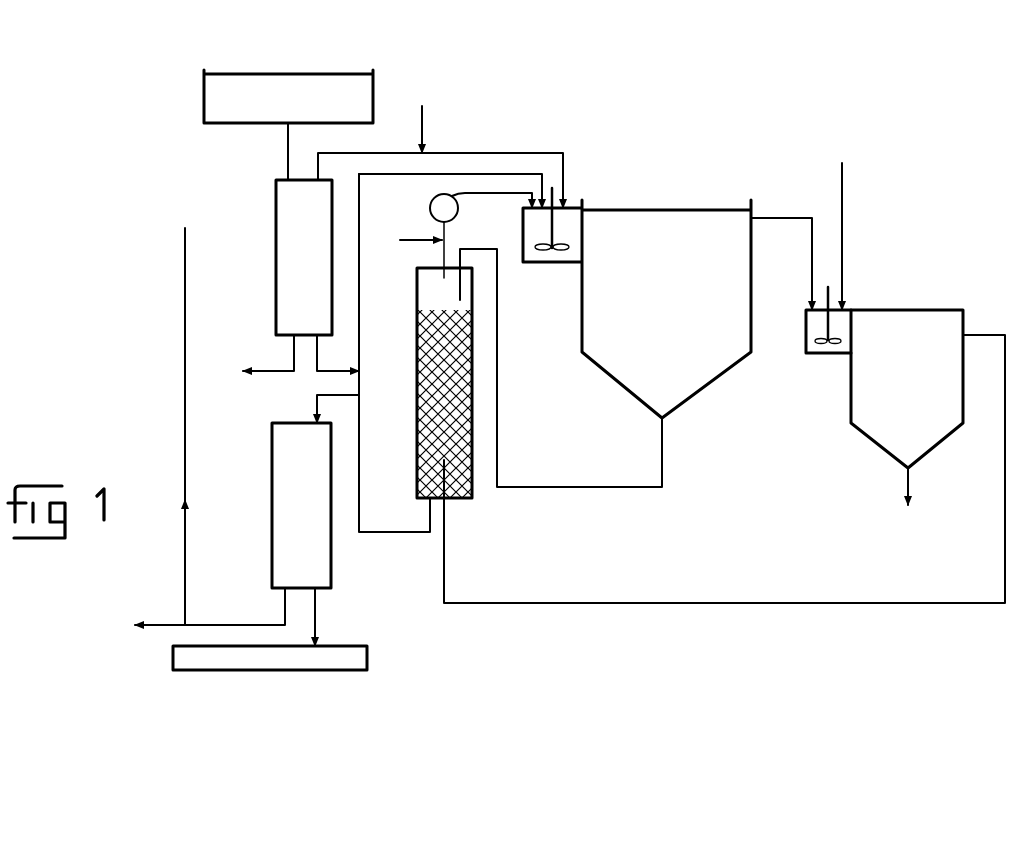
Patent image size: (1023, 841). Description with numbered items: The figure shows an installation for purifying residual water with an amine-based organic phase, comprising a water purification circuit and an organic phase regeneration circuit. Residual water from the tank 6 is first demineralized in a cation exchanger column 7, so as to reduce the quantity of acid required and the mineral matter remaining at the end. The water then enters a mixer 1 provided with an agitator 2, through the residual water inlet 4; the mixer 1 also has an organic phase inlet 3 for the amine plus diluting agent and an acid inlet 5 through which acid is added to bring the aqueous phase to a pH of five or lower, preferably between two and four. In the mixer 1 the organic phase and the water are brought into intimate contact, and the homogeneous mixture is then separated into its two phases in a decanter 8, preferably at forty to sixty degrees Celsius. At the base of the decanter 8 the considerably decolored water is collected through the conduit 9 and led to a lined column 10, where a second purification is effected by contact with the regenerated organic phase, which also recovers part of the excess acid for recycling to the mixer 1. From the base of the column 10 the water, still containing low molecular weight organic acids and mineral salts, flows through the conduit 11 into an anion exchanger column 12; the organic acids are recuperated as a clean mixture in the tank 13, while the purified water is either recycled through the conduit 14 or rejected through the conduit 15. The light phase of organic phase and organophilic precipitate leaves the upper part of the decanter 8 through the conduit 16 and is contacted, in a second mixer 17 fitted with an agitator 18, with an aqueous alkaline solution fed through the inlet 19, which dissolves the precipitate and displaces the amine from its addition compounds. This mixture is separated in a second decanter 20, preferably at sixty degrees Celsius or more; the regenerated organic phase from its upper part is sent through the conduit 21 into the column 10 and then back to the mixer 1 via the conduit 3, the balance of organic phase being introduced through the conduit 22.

The mixer 1 is at (570, 225).
The agitator 2 is at (546, 253).
The organic phase inlet 3 is at (508, 197).
The residual water inlet 4 is at (489, 173).
The acid inlet 5 is at (440, 153).
The tank 6 is at (210, 100).
The cation exchanger column 7 is at (286, 238).
The decanter 8 is at (665, 296).
The conduit 9 is at (589, 487).
The lined column 10 is at (418, 343).
The conduit 11 is at (418, 532).
The anion exchanger column 12 is at (286, 511).
The tank 13 is at (345, 650).
The conduit 14 is at (185, 371).
The conduit 15 is at (155, 625).
The conduit 16 is at (779, 216).
The second mixer 17 is at (812, 356).
The agitator 18 is at (826, 325).
The inlet 19 is at (843, 219).
The second decanter 20 is at (921, 396).
The conduit 21 is at (670, 606).
The conduit 22 is at (416, 240).